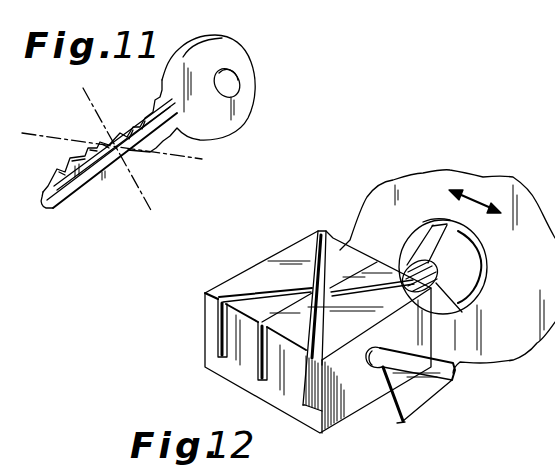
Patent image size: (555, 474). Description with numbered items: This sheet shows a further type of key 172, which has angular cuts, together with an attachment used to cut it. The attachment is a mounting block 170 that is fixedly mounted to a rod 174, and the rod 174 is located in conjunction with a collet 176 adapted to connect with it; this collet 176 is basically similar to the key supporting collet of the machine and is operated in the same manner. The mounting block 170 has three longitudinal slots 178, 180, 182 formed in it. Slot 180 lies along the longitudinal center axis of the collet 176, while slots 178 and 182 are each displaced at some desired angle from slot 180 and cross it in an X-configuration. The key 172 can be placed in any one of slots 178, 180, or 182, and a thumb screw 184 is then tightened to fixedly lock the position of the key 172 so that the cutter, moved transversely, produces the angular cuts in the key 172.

In FIG. 12, the mounting block 170 is at (278, 268).
In FIG. 11, the key 172 is at (205, 117).
In FIG. 12, the rod 174 is at (416, 269).
In FIG. 12, the collet 176 is at (480, 253).
In FIG. 12, the slot 178 is at (218, 333).
In FIG. 12, the slot 180 is at (254, 366).
In FIG. 12, the slot 182 is at (305, 402).
In FIG. 12, the thumb screw 184 is at (423, 384).